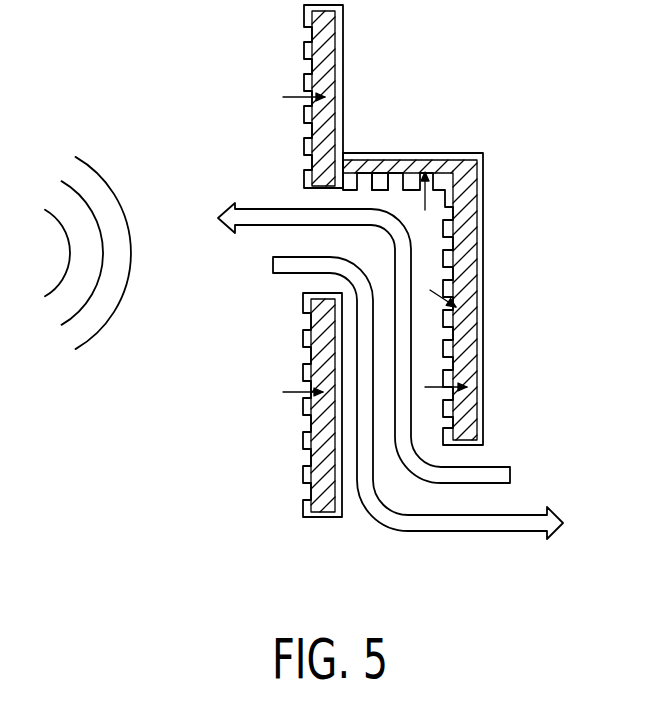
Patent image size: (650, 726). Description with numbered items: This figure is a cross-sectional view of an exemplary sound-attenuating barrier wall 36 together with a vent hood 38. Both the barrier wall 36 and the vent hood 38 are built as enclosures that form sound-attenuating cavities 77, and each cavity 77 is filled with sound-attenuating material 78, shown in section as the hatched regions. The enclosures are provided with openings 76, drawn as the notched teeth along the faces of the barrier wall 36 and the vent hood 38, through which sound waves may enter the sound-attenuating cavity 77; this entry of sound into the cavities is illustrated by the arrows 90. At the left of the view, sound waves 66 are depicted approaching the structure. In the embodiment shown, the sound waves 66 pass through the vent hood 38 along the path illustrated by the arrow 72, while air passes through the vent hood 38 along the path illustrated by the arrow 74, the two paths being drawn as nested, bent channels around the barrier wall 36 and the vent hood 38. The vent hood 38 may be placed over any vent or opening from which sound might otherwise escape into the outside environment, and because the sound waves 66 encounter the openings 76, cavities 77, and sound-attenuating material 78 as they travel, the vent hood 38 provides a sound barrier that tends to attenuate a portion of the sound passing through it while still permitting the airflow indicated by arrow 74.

The barrier wall 36 is at (339, 26).
The vent hood 38 is at (463, 153).
The sound waves 66 is at (100, 178).
The arrow 72 is at (470, 532).
The arrow 74 is at (495, 470).
The openings 76 is at (308, 458).
The sound-attenuating cavity 77 is at (414, 173).
The sound-attenuating material 78 is at (377, 170).
The arrows 90 is at (300, 96).